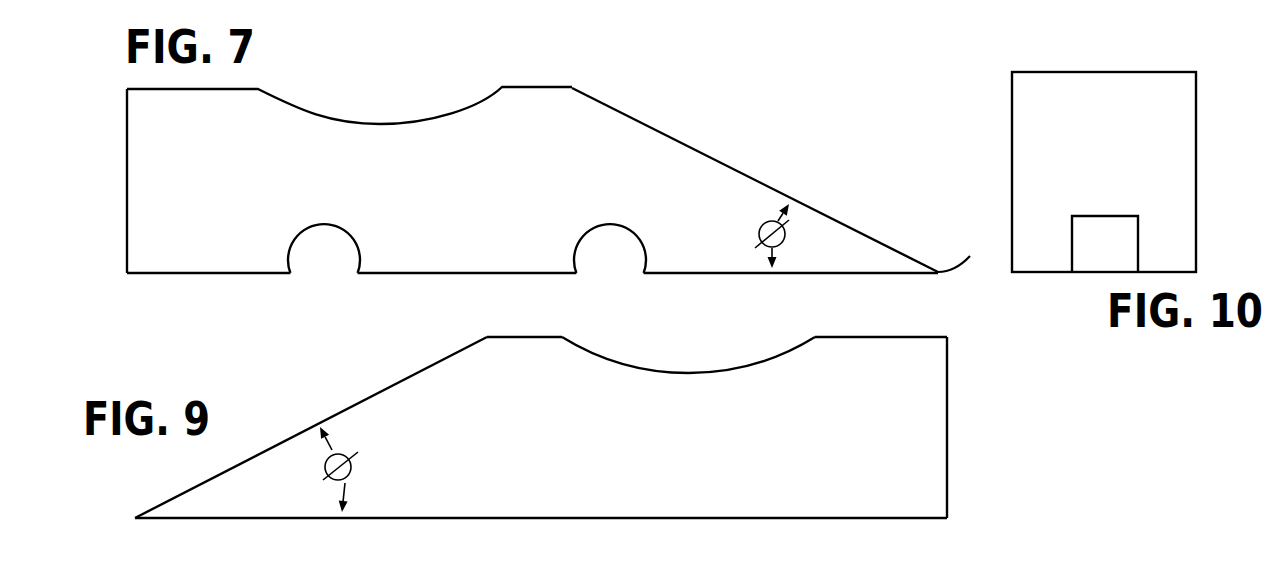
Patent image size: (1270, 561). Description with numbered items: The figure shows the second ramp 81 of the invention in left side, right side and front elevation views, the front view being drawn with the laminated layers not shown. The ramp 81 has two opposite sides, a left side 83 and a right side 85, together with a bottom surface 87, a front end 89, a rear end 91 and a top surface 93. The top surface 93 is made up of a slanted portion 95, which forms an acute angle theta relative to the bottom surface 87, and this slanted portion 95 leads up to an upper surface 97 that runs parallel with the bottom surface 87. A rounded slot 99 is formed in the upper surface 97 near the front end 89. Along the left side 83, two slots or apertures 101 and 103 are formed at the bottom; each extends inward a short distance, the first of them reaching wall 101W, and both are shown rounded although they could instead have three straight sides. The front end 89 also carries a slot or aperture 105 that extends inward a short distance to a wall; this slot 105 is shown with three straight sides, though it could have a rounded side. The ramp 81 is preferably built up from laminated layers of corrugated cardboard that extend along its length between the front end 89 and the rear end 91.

In FIG. 7, the ramp 81 is at (733, 128).
In FIG. 9, the ramp 81 is at (1023, 451).
In FIG. 10, the ramp 81 is at (990, 77).
In FIG. 7, the left side 83 is at (205, 250).
In FIG. 9, the left side 83 is at (475, 539).
In FIG. 9, the right side 85 is at (815, 488).
In FIG. 9, the bottom surface 87 is at (650, 520).
In FIG. 7, the front end 89 is at (127, 182).
In FIG. 9, the front end 89 is at (948, 428).
In FIG. 10, the front end 89 is at (1162, 176).
In FIG. 7, the rear end 91 is at (960, 250).
In FIG. 9, the rear end 91 is at (135, 518).
In FIG. 7, the top surface 93 is at (624, 91).
In FIG. 7, the slanted portion 95 is at (828, 216).
In FIG. 9, the slanted portion 95 is at (333, 413).
In FIG. 9, the upper surface 97 is at (518, 337).
In FIG. 9, the rounded slot 99 is at (732, 372).
In FIG. 7, the slot 101 is at (325, 247).
In FIG. 9, the slot 101 is at (330, 539).
In FIG. 9, the wall 101W is at (227, 539).
In FIG. 7, the slot 103 is at (608, 248).
In FIG. 10, the slot 105 is at (1106, 253).